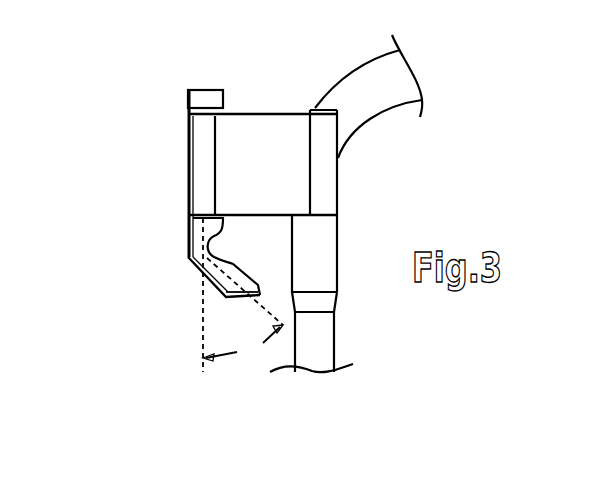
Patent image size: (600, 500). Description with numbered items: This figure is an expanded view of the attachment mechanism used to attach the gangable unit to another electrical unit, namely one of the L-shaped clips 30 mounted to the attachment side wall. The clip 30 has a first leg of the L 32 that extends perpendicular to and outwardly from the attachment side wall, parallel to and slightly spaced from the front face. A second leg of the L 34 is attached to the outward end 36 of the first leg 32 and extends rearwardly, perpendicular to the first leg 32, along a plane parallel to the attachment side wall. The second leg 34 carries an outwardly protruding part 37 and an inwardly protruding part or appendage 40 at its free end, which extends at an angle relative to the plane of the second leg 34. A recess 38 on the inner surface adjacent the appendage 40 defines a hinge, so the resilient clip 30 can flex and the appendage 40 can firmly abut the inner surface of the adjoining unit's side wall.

The clip 30 is at (133, 262).
The first leg of the L 32 is at (255, 127).
The second leg of the L 34 is at (187, 233).
The outward end 36 is at (187, 153).
The outwardly protruding part 37 is at (205, 98).
The recess 38 is at (187, 260).
The appendage 40 is at (243, 293).